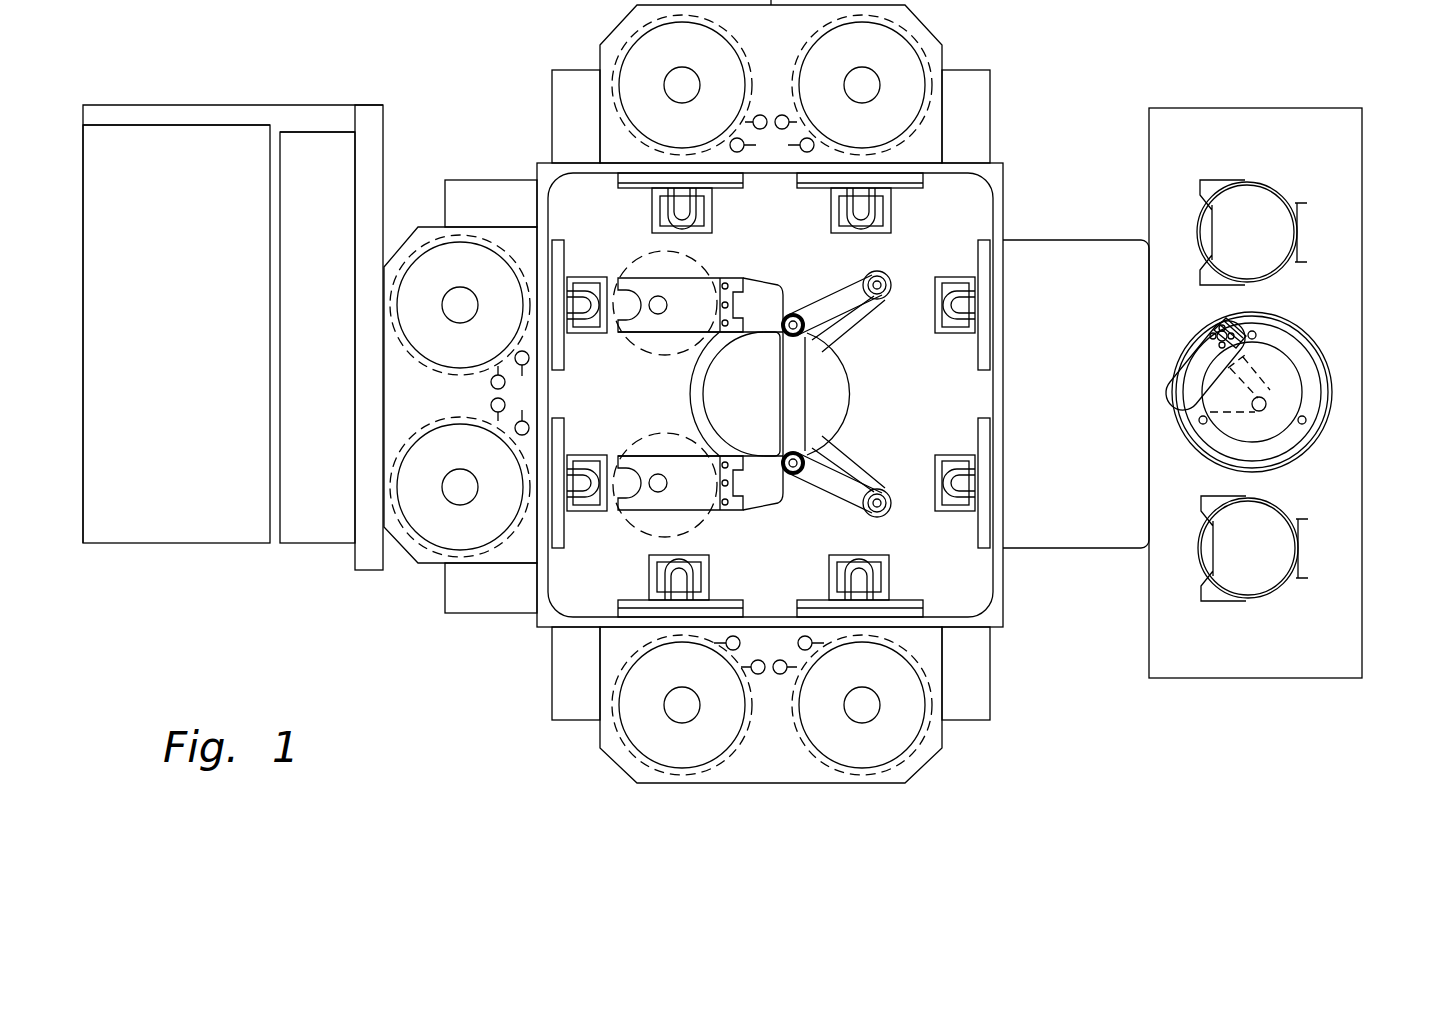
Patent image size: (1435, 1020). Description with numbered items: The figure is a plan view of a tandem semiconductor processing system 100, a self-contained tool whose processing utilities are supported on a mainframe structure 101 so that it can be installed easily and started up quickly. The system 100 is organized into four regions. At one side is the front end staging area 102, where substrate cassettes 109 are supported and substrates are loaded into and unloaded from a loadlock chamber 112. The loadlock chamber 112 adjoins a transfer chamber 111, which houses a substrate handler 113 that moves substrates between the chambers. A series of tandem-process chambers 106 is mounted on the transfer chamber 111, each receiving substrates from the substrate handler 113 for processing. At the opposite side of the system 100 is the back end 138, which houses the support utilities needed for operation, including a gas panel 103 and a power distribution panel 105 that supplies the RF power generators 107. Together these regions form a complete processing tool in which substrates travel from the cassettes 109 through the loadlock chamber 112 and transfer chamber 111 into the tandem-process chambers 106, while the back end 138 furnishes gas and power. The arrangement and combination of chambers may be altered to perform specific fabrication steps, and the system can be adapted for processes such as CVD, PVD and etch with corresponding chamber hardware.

The tandem semiconductor processing system 100 is at (1043, 40).
The back end 138 is at (168, 104).
The mainframe structure 101 is at (372, 127).
The gas panel 103 is at (162, 545).
The power distribution panel 105 is at (303, 545).
The tandem-process chambers 106 is at (420, 567).
The RF power generators 107 is at (551, 97).
The transfer chamber 111 is at (1005, 593).
The substrate handler 113 is at (818, 404).
The loadlock chamber 112 is at (1080, 240).
The front end staging area 102 is at (1362, 303).
The substrate cassettes 109 is at (1270, 234).